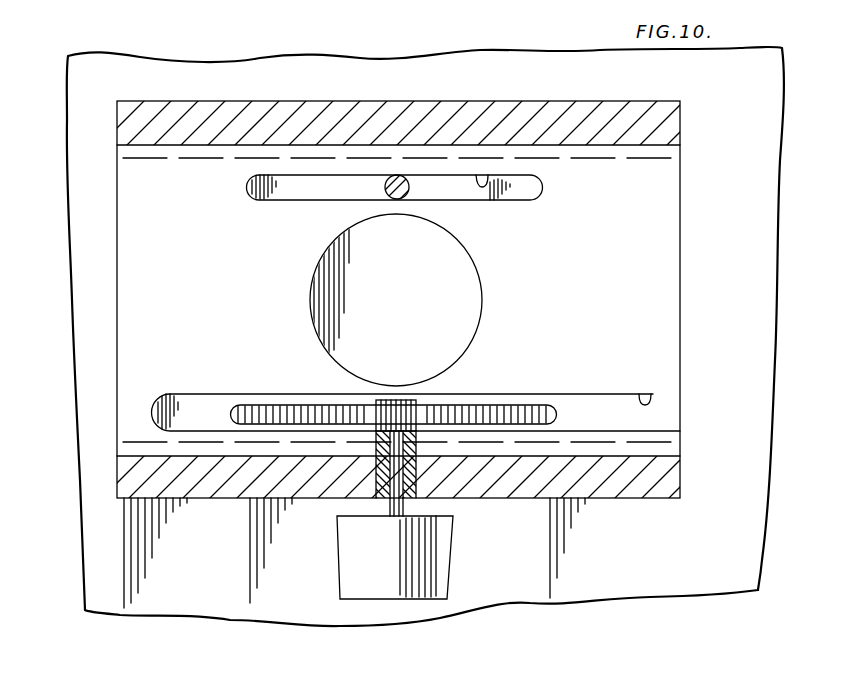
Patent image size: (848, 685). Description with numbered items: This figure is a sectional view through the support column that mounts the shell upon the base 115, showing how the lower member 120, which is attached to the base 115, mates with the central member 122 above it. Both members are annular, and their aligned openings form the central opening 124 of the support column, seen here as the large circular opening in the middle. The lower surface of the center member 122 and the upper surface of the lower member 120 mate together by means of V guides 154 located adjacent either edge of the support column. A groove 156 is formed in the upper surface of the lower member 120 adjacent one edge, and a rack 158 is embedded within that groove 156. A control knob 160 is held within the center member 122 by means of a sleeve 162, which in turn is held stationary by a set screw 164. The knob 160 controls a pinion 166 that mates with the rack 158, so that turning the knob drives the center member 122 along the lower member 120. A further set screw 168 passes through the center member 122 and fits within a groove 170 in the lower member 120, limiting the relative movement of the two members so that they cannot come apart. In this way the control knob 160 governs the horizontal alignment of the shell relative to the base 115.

The base 115 is at (752, 230).
The lower member 120 is at (665, 210).
The central member 122 is at (608, 125).
The central opening 124 is at (323, 272).
The V guides 154 is at (130, 152).
The groove 156 is at (645, 396).
The rack 158 is at (472, 407).
The control knob 160 is at (430, 577).
The sleeve 162 is at (373, 477).
The set screw 164 is at (388, 506).
The pinion 166 is at (399, 399).
The set screw 168 is at (397, 176).
The groove 170 is at (482, 186).